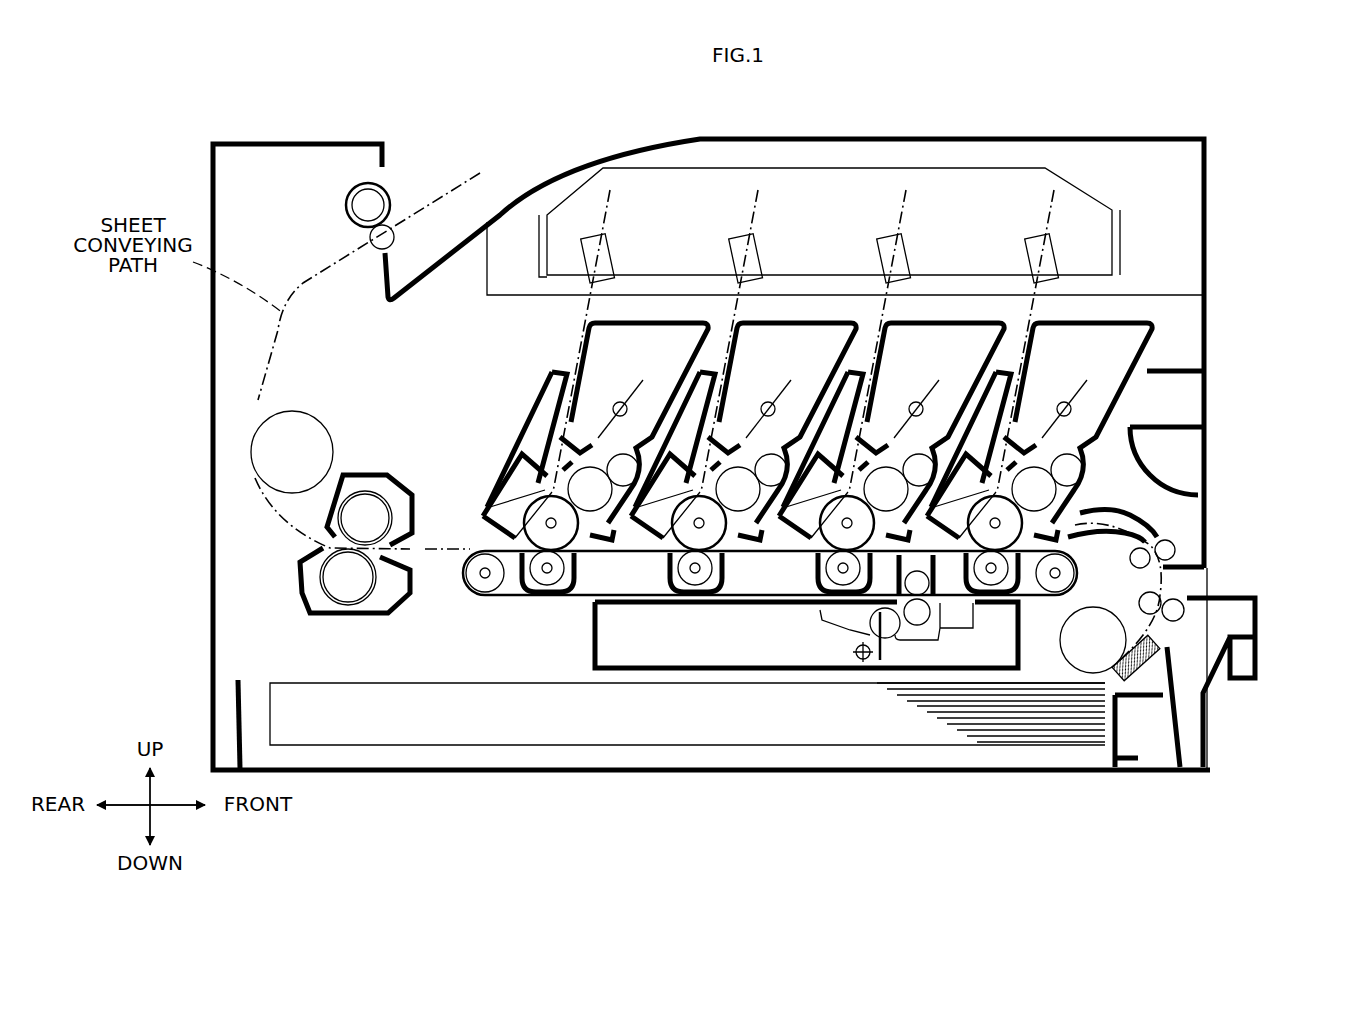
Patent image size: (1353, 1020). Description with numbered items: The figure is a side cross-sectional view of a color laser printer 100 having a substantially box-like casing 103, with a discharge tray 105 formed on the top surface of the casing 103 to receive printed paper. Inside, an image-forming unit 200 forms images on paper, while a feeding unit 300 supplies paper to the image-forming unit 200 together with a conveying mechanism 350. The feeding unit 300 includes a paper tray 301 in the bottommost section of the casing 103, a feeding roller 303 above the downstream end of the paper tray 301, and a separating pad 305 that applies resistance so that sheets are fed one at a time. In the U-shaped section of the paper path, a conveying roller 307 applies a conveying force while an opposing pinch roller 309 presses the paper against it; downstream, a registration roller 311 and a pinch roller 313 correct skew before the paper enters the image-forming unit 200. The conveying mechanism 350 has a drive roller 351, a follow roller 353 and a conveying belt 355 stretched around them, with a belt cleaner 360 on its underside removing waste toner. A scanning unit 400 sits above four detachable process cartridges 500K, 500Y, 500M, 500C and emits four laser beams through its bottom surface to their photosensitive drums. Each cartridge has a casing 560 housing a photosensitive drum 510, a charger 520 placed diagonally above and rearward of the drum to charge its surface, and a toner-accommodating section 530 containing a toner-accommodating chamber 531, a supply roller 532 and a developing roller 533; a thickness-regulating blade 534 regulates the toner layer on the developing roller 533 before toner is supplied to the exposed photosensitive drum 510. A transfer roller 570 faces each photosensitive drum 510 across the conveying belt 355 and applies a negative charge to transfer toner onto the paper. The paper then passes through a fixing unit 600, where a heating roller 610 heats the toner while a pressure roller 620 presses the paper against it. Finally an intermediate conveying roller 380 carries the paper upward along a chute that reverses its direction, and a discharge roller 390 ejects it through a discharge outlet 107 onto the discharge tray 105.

The laser printer 100 is at (1128, 96).
The casing 103 is at (287, 143).
The discharge tray 105 is at (513, 197).
The discharge outlet 107 is at (382, 177).
The image-forming unit 200 is at (1127, 310).
The feeding unit 300 is at (1175, 583).
The paper tray 301 is at (1122, 727).
The feeding roller 303 is at (1090, 640).
The separating pad 305 is at (1140, 672).
The conveying roller 307 is at (1187, 635).
The pinch roller 309 is at (1180, 608).
The registration roller 311 is at (1143, 535).
The pinch roller 313 is at (1168, 550).
The conveying mechanism 350 is at (1133, 513).
The drive roller 351 is at (483, 598).
The follow roller 353 is at (1052, 592).
The conveying belt 355 is at (556, 592).
The belt cleaner 360 is at (808, 686).
The intermediate conveying roller 380 is at (265, 440).
The discharge roller 390 is at (353, 184).
The scanning unit 400 is at (821, 162).
The process cartridge 500C is at (687, 323).
The process cartridge 500M is at (835, 323).
The process cartridge 500Y is at (985, 323).
The process cartridge 500K is at (1137, 321).
The photosensitive drum 510 is at (568, 540).
The charger 520 is at (530, 505).
The toner-accommodating section 530 is at (650, 323).
The toner-accommodating chamber 531 is at (623, 340).
The supply roller 532 is at (624, 480).
The developing roller 533 is at (590, 467).
The thickness-regulating blade 534 is at (560, 452).
The casing 560 is at (532, 396).
The transfer roller 570 is at (540, 586).
The fixing unit 600 is at (300, 545).
The heating roller 610 is at (365, 510).
The pressure roller 620 is at (330, 573).